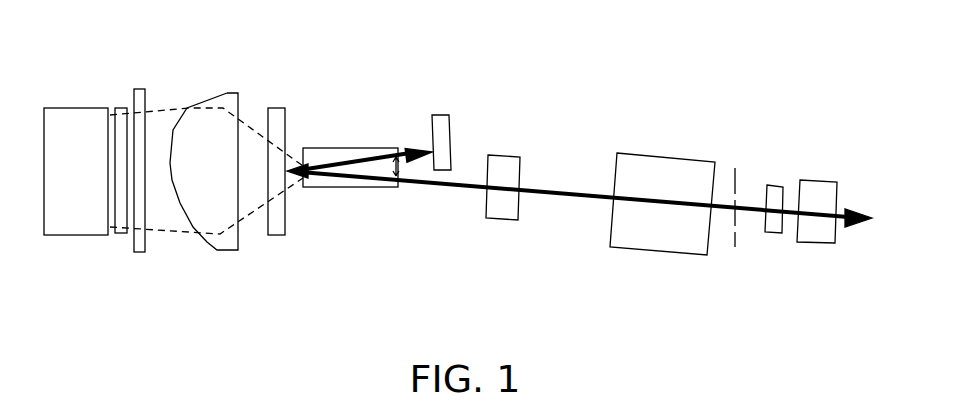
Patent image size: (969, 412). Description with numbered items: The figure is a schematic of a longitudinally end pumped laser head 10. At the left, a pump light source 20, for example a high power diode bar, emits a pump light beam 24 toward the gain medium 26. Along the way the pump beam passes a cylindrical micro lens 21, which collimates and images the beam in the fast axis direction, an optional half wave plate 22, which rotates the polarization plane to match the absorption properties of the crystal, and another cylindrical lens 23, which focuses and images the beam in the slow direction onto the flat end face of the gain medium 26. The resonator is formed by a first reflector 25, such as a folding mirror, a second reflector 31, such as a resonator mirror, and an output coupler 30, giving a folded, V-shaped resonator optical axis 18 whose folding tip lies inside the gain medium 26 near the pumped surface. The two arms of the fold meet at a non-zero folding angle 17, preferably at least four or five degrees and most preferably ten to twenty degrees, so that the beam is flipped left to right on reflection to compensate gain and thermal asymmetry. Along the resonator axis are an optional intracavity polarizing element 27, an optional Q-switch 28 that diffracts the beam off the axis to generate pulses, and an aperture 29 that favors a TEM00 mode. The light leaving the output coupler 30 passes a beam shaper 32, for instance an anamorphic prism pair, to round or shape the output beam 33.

The longitudinally pumped laser head 10 is at (526, 66).
The folding angle 17 is at (398, 150).
The resonator optical axis 18 is at (542, 191).
The pump light source 20 is at (90, 108).
The cylindrical micro lens 21 is at (121, 108).
The half wave plate 22 is at (138, 258).
The cylindrical lens 23 is at (215, 245).
The pump light beam 24 is at (163, 108).
The first reflector 25 is at (278, 235).
The gain medium 26 is at (348, 148).
The intracavity polarizing element 27 is at (500, 220).
The Q-switch 28 is at (652, 253).
The aperture 29 is at (733, 247).
The output coupler 30 is at (785, 245).
The second reflector 31 is at (450, 138).
The beam shaper 32 is at (808, 180).
The output beam 33 is at (850, 203).